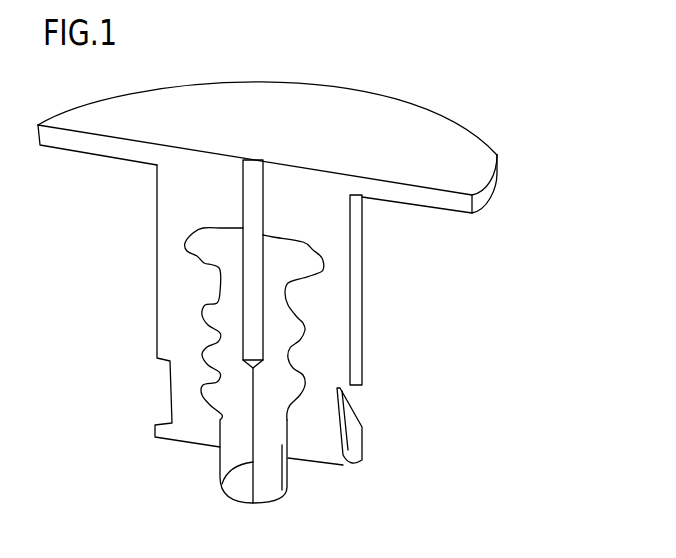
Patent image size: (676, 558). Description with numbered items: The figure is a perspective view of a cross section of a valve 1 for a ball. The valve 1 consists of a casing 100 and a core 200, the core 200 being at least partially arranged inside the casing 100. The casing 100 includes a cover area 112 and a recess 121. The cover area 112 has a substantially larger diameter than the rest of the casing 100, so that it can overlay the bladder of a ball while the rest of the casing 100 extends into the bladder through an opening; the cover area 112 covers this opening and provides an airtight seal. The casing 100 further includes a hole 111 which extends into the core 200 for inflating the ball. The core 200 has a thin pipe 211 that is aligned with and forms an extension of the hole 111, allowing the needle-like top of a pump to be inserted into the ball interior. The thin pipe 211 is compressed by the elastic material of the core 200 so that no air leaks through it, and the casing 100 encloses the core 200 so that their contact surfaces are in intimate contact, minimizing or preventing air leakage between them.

The valve 1 is at (482, 105).
The casing 100 is at (150, 242).
The hole 111 is at (252, 162).
The cover area 112 is at (490, 158).
The recess 121 is at (350, 418).
The core 200 is at (293, 493).
The thin pipe 211 is at (223, 485).